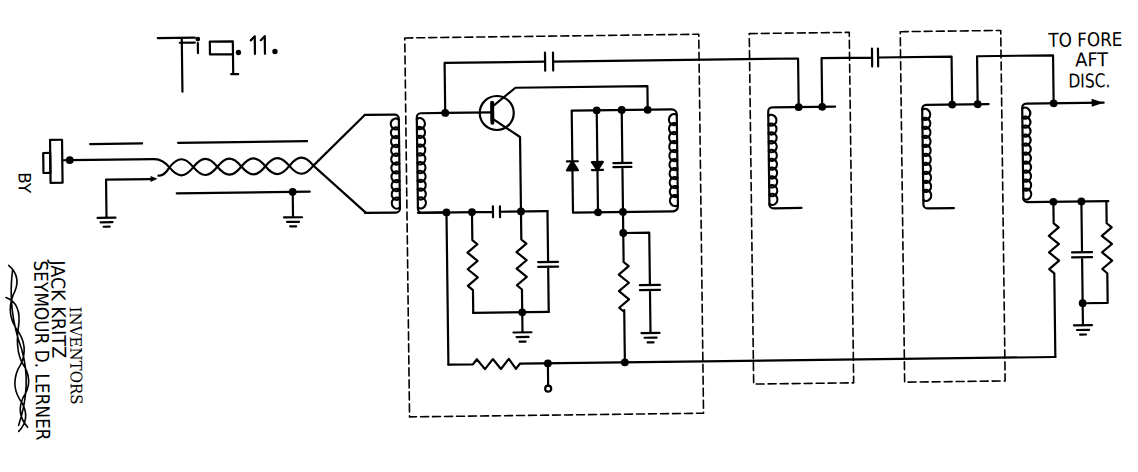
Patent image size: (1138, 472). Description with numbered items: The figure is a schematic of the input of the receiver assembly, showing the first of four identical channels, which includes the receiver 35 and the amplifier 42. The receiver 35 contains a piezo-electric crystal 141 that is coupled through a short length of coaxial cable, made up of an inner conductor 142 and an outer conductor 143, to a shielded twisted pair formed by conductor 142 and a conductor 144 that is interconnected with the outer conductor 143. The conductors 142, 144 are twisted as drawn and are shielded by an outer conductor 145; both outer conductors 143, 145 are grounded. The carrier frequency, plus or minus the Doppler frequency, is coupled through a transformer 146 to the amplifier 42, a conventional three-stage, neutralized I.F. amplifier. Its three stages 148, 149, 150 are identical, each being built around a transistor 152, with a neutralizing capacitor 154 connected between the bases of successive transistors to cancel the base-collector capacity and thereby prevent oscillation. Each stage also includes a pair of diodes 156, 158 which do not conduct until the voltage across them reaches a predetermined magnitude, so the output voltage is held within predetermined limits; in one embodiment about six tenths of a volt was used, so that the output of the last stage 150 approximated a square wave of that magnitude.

The receiver 35 is at (224, 231).
The amplifier 42 is at (746, 424).
The piezo-electric crystal 141 is at (58, 131).
The inner conductor 142 is at (156, 152).
The outer conductor 143 is at (113, 137).
The conductor 144 is at (186, 154).
The outer conductor 145 is at (260, 139).
The transformer 146 is at (398, 216).
The amplifier stage 148 is at (408, 384).
The amplifier stage 149 is at (798, 390).
The amplifier stage 150 is at (940, 392).
The transistor 152 is at (477, 120).
The neutralizing capacitor 154 is at (547, 56).
The diode 156 is at (571, 160).
The diode 158 is at (590, 171).